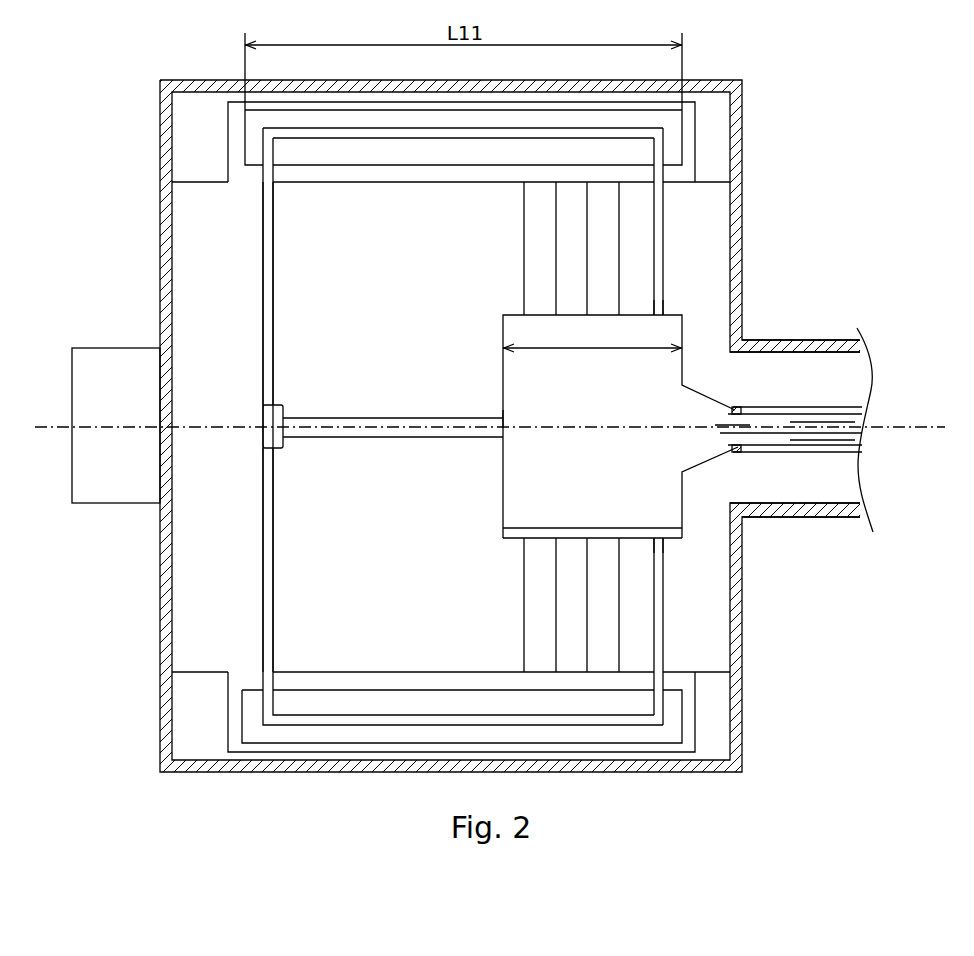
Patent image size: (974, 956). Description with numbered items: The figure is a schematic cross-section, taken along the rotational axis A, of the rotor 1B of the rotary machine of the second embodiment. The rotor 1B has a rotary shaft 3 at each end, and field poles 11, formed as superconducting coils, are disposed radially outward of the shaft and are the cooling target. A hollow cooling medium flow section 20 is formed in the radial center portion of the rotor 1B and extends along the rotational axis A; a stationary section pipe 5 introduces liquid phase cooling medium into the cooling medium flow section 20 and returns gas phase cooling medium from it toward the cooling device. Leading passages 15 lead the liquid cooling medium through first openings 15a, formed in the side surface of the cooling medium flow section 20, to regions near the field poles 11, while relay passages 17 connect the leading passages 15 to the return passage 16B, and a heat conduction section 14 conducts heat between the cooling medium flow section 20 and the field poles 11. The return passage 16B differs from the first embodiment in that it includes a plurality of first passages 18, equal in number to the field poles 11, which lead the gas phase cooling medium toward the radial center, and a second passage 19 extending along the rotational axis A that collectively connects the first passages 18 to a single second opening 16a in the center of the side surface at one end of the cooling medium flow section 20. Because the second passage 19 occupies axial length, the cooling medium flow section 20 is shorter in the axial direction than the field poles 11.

The rotor 1B is at (770, 99).
The rotary shaft 3 is at (100, 348).
The stationary section pipe 5 is at (806, 453).
The field poles 11 is at (672, 145).
The heat conduction section 14 is at (538, 247).
The leading passages 15 is at (663, 250).
The first openings 15a is at (662, 322).
The second opening 16a is at (506, 420).
The return passage 16B is at (292, 392).
The relay passages 17 is at (383, 138).
The first passages 18 is at (263, 244).
The second passage 19 is at (385, 428).
The cooling medium flow section 20 is at (600, 468).
The rotational axis A is at (926, 427).